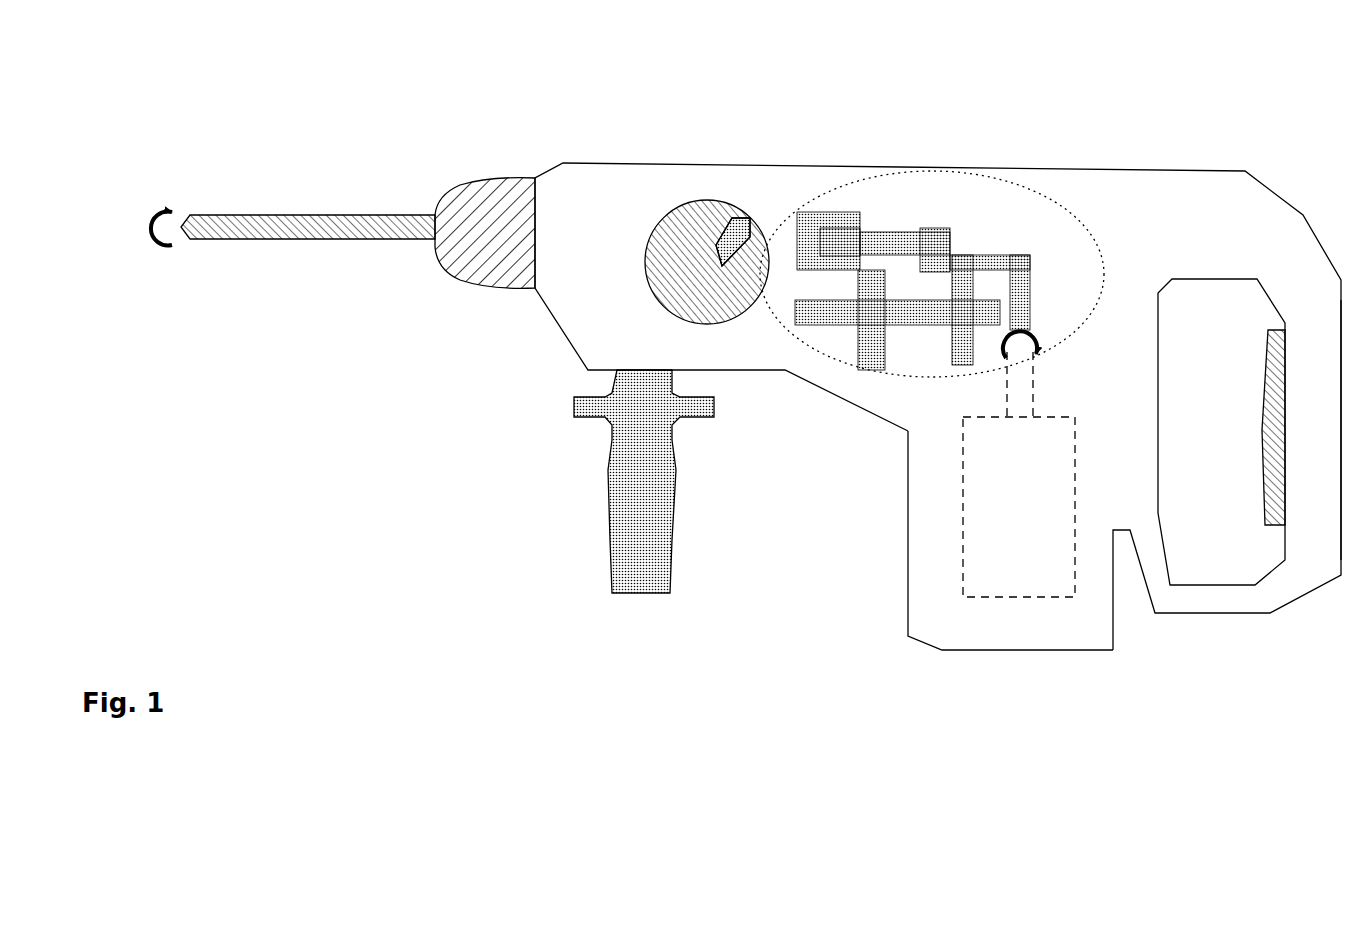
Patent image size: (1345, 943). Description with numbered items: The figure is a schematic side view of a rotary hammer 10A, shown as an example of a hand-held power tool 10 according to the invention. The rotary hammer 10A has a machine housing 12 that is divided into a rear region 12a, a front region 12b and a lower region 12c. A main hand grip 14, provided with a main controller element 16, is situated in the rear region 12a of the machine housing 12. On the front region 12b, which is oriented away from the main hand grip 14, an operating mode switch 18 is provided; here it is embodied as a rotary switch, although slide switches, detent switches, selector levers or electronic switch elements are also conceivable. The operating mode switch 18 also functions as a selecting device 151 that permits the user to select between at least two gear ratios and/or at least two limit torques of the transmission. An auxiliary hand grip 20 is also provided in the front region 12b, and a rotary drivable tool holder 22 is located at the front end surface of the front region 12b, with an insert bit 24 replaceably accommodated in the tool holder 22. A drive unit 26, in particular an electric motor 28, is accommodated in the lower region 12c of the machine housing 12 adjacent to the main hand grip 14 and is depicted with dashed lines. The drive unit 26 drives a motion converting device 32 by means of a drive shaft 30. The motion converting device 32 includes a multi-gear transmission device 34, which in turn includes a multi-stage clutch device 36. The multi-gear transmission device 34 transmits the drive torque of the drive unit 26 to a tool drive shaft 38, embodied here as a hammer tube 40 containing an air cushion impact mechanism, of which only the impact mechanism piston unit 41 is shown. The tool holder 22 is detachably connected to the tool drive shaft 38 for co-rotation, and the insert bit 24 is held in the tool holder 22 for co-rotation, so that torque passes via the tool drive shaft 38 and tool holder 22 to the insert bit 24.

The power tool 10 is at (746, 359).
The rotary hammer 10A is at (1010, 100).
The machine housing 12 is at (1092, 169).
The rear region 12a is at (1205, 192).
The front region 12b is at (610, 183).
The lower region 12c is at (958, 633).
The main hand grip 14 is at (1308, 335).
The main controller element 16 is at (1276, 407).
The operating mode switch 18 is at (687, 189).
The selecting device 151 is at (697, 222).
The auxiliary hand grip 20 is at (625, 492).
The tool holder 22 is at (485, 267).
The insert bit 24 is at (340, 229).
The drive unit 26 is at (934, 474).
The electric motor 28 is at (982, 515).
The drive shaft 30 is at (1022, 295).
The motion converting device 32 is at (950, 188).
The multi-gear transmission device 34 is at (905, 283).
The multi-stage clutch device 36 is at (885, 330).
The tool drive shaft 38 is at (784, 168).
The hammer tube 40 is at (807, 212).
The impact mechanism piston unit 41 is at (835, 238).